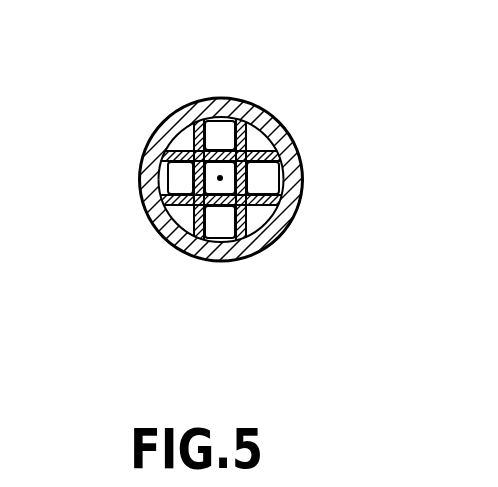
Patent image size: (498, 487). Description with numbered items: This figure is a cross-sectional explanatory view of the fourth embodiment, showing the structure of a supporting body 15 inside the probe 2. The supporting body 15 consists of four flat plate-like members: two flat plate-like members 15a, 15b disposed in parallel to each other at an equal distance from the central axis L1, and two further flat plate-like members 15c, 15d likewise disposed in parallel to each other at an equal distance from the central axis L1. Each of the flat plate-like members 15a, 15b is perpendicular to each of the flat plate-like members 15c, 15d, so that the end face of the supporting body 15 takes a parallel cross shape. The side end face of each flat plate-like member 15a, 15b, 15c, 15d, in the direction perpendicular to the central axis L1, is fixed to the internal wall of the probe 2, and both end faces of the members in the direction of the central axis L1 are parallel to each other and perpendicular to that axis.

The probe 2 is at (152, 129).
The supporting body 15 is at (183, 165).
The flat plate-like member 15a is at (187, 145).
The flat plate-like member 15b is at (187, 220).
The flat plate-like member 15c is at (213, 136).
The flat plate-like member 15d is at (250, 215).
The central axis L1 is at (220, 178).